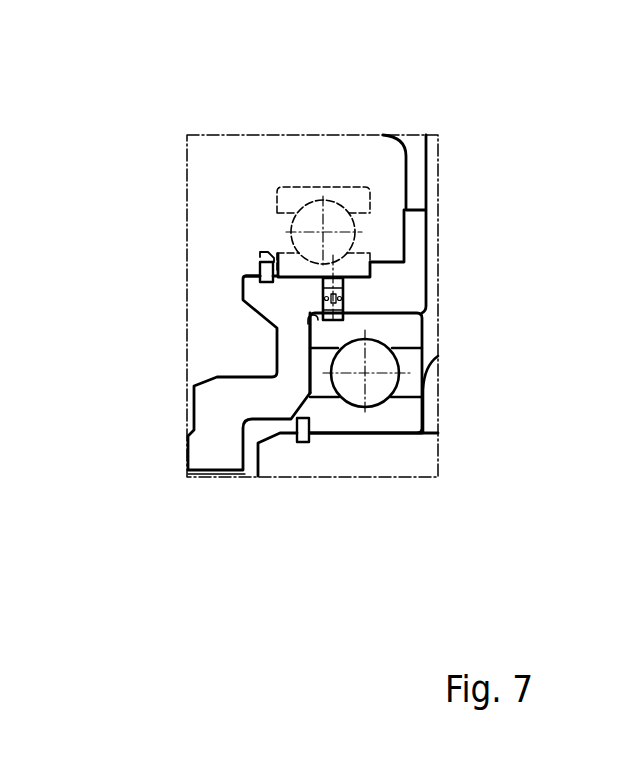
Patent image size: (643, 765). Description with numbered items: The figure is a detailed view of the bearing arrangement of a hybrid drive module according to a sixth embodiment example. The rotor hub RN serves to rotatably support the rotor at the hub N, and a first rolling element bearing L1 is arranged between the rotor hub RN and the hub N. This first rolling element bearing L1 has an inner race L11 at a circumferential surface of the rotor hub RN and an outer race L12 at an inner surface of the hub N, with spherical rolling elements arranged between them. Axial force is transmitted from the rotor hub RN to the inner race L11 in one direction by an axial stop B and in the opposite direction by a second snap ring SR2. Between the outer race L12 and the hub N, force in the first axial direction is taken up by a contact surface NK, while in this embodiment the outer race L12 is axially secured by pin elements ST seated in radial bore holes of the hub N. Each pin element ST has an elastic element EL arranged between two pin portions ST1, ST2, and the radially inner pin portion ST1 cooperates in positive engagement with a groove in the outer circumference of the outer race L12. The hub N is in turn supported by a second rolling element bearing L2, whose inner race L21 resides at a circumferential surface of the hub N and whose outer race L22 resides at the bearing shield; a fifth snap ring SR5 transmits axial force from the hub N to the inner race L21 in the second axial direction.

The outer race L22 is at (295, 198).
The inner race L21 is at (352, 267).
The second rolling element bearing L2 is at (270, 228).
The fifth snap ring SR5 is at (262, 267).
The pin portion ST2 is at (324, 288).
The elastic element EL is at (323, 299).
The contact surface NK is at (308, 338).
The hub N is at (235, 410).
The second snap ring SR2 is at (302, 430).
The rotor hub RN is at (327, 457).
The first rolling element bearing L1 is at (365, 442).
The inner race L11 is at (393, 412).
The outer race L12 is at (397, 332).
The pin element ST is at (345, 292).
The radially inner pin portion ST1 is at (343, 299).
The axial stop B is at (428, 410).